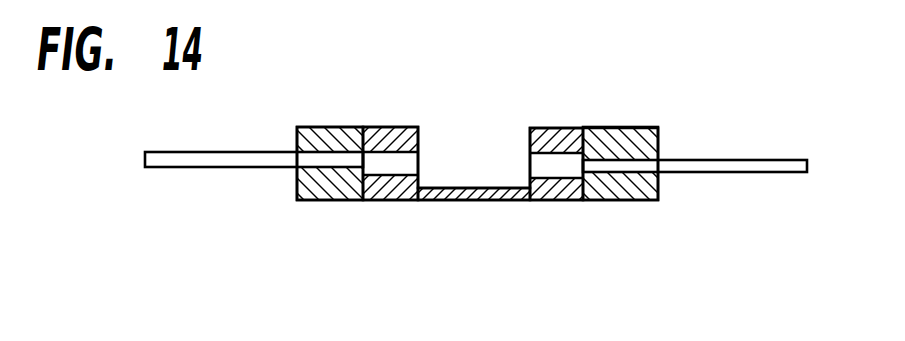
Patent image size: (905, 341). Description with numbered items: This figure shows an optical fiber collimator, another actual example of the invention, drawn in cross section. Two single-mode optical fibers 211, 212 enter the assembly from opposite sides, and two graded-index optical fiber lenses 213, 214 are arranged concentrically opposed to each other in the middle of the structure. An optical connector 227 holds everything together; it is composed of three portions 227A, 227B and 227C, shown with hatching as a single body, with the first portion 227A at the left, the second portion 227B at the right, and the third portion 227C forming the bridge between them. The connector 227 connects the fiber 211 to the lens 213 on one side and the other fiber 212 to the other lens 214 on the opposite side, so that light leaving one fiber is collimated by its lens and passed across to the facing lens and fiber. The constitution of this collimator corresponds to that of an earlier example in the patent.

The single-mode optical fiber 211 is at (236, 156).
The single-mode optical fiber 212 is at (713, 163).
The graded-index optical fiber lens 213 is at (418, 151).
The graded-index optical fiber lens 214 is at (533, 164).
The optical connector 227 is at (662, 259).
The connector portion 227A is at (338, 203).
The connector portion 227B is at (631, 204).
The connector portion 227C is at (463, 202).